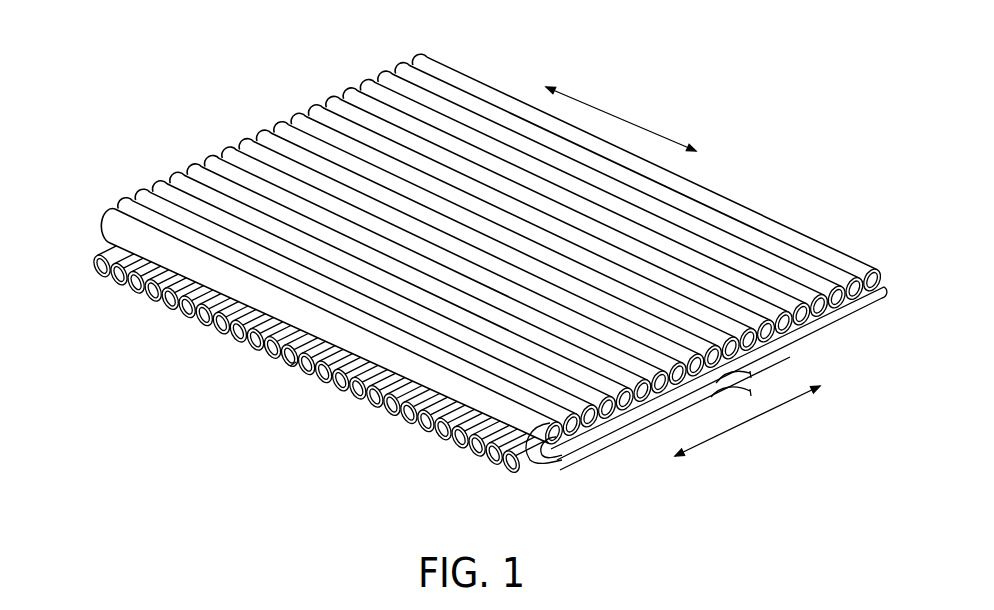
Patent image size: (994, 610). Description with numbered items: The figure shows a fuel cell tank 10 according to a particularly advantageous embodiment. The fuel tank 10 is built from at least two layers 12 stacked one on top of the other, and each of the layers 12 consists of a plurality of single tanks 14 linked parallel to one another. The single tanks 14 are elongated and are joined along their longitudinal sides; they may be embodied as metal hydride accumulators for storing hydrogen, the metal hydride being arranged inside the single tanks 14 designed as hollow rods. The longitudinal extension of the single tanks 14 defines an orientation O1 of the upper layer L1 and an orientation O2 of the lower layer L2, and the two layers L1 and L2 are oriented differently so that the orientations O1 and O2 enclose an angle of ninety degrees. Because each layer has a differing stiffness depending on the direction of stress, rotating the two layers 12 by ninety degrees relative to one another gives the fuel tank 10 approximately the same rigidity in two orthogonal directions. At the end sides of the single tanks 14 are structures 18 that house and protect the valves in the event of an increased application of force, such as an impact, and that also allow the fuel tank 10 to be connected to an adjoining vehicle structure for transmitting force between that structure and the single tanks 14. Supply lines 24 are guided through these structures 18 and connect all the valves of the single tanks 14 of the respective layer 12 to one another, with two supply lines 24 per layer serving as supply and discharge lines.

The fuel cell tank 10 is at (466, 262).
The layers 12 is at (466, 242).
The single tanks 14 is at (382, 93).
The structures 18 is at (293, 362).
The supply lines 24 is at (562, 462).
The first layer L1 is at (198, 180).
The second layer L2 is at (466, 242).
The orientation of the first layer O1 is at (621, 119).
The orientation of the second layer O2 is at (747, 421).